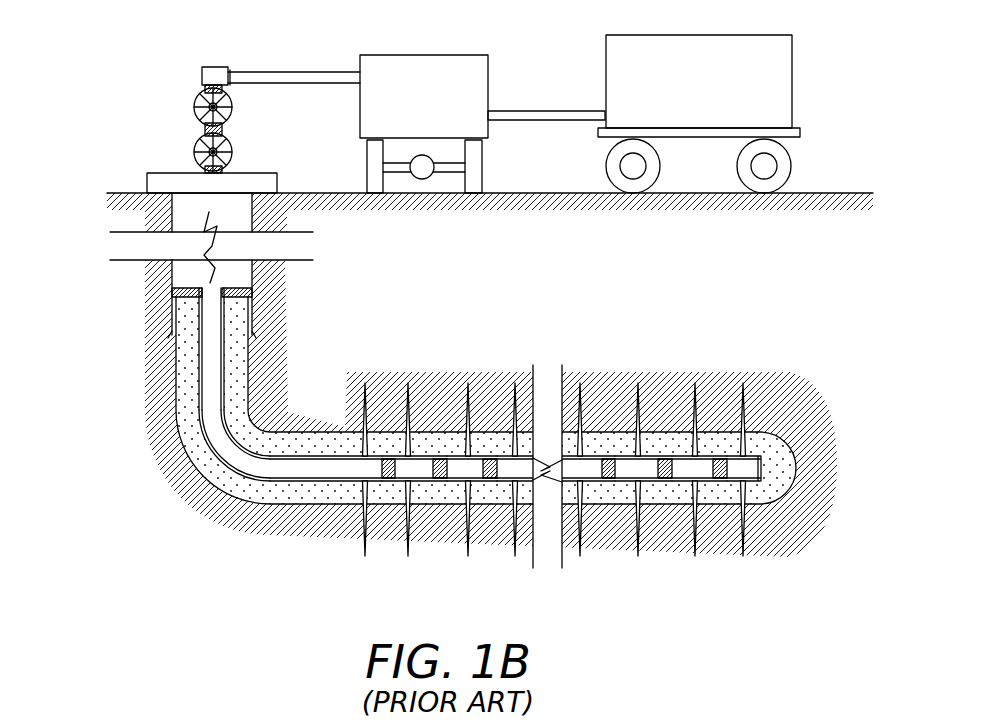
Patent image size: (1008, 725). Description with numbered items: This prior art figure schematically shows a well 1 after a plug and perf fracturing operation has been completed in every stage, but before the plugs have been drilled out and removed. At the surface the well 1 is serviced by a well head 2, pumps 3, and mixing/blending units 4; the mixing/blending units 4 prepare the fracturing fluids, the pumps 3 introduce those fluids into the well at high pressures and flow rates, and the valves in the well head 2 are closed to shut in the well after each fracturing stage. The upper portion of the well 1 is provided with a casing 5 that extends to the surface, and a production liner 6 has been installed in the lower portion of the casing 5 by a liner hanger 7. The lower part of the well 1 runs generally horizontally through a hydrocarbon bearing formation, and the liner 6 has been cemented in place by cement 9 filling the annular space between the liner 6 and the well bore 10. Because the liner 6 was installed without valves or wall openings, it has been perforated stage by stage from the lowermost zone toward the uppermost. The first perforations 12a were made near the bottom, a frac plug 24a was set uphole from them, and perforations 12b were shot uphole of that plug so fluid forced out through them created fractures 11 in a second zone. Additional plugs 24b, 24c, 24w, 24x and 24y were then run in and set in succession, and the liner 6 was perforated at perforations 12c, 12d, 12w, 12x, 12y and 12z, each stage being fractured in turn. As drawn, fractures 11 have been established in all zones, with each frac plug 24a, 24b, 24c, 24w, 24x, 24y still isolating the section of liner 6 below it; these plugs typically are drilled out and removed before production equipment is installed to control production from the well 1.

The well 1 is at (95, 212).
The well head 2 is at (200, 129).
The pumps 3 is at (418, 70).
The mixing/blending units 4 is at (697, 47).
The casing 5 is at (255, 287).
The production liner 6 is at (208, 428).
The liner hanger 7 is at (186, 299).
The cement 9 is at (233, 485).
The well bore 10 is at (180, 370).
The fractures 11 is at (362, 516).
The perforations 12a is at (763, 483).
The perforations 12b is at (702, 485).
The perforations 12c is at (633, 450).
The perforations 12d is at (587, 485).
The perforations 12w is at (508, 487).
The perforations 12x is at (443, 458).
The perforations 12y is at (403, 487).
The perforations 12z is at (357, 436).
The frac plug 24a is at (722, 455).
The frac plug 24b is at (666, 455).
The frac plug 24c is at (608, 458).
The frac plug 24w is at (492, 456).
The frac plug 24x is at (463, 448).
The frac plug 24y is at (367, 465).